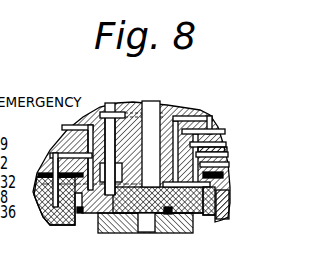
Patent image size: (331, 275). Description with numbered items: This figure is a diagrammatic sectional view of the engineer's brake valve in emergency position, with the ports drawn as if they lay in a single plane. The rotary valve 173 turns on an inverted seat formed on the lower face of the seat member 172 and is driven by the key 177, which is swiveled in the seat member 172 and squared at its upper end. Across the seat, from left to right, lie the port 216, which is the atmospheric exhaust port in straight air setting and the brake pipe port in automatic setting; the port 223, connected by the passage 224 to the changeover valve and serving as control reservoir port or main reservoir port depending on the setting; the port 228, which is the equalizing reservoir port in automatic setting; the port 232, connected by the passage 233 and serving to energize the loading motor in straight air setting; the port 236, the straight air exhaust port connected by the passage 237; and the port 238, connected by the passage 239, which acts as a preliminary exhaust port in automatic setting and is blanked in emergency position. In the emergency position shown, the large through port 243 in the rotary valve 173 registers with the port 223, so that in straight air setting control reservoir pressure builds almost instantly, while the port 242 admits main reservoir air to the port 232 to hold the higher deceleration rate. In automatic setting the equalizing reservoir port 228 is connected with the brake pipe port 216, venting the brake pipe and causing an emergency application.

The key 177 is at (158, 104).
The port 223 is at (110, 110).
The passage 224 is at (201, 115).
The port 216 is at (67, 127).
The port 228 is at (55, 160).
The passage 233 is at (208, 129).
The passage 237 is at (215, 143).
The port 236 is at (217, 148).
The passage 239 is at (222, 154).
The port 238 is at (225, 162).
The seat member 172 is at (226, 174).
The port 232 is at (227, 188).
The port 242 is at (228, 202).
The rotary valve 173 is at (210, 200).
The large through port 243 is at (145, 235).